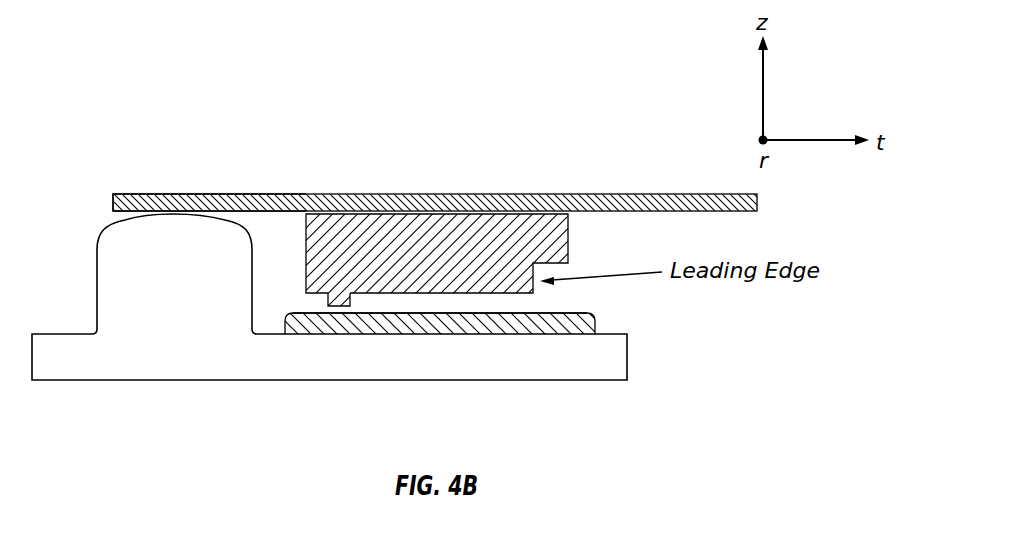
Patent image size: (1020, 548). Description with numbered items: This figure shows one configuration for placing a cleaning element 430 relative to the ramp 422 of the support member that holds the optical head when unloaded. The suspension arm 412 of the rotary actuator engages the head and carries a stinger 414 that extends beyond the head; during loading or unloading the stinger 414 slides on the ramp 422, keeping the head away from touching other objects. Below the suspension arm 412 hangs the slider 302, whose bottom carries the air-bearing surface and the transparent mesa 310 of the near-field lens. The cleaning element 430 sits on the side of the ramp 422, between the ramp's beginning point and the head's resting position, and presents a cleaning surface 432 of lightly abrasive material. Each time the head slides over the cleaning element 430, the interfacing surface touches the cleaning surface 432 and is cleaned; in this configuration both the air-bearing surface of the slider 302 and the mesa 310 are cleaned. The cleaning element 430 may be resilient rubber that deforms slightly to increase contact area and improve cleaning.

The slider substrate 302 is at (568, 249).
The transparent mesa 310 is at (328, 300).
The suspension arm 412 is at (434, 168).
The stinger 414 is at (209, 166).
The ramp 422 is at (329, 329).
The cleaning element 430 is at (595, 324).
The cleaning surface 432 is at (440, 379).